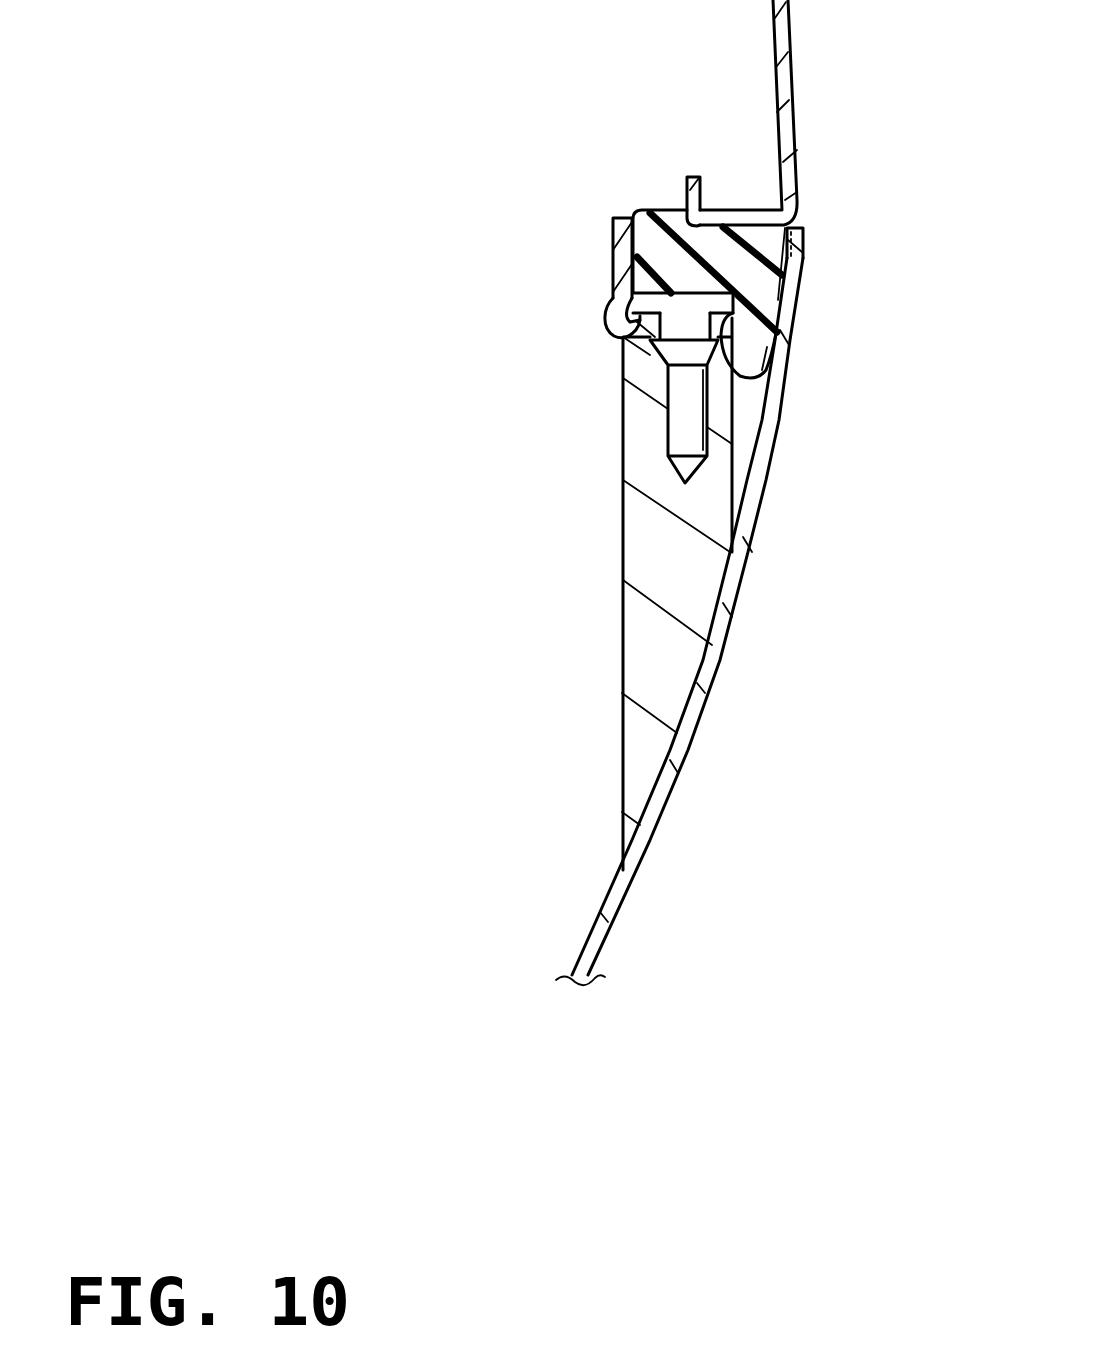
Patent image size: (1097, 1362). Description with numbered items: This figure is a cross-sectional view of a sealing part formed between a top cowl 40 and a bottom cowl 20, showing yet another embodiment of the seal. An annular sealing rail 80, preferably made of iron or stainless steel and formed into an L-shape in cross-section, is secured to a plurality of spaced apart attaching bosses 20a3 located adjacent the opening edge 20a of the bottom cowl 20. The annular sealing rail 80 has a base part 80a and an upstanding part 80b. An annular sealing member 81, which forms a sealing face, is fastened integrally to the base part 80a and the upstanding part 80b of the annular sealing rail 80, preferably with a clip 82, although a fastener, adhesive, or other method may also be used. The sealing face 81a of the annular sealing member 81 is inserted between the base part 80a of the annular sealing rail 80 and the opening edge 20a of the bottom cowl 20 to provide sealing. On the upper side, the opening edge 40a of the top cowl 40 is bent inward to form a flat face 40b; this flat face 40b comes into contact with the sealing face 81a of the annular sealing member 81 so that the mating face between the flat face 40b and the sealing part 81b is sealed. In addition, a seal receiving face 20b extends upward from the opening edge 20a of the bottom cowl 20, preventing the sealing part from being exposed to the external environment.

The bottom cowl 20 is at (748, 599).
The opening edge 20a is at (708, 594).
The attaching bosses 20a3 is at (683, 493).
The seal receiving face 20b is at (806, 243).
The top cowl 40 is at (798, 116).
The opening edge 40a is at (798, 135).
The flat face 40b is at (745, 232).
The annular sealing rail 80 is at (551, 270).
The base part 80a is at (640, 345).
The upstanding part 80b is at (622, 250).
The annular sealing member 81 is at (757, 192).
The sealing face 81a is at (765, 352).
The sealing part 81b is at (686, 195).
The clip 82 is at (680, 423).